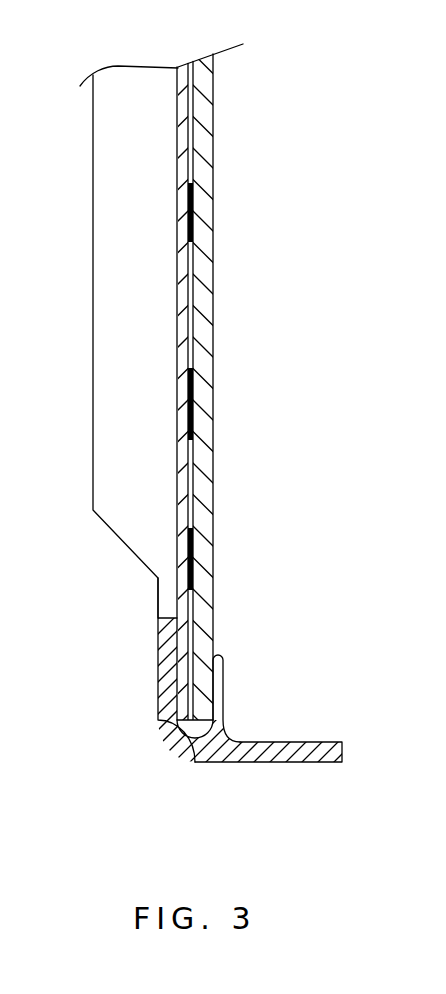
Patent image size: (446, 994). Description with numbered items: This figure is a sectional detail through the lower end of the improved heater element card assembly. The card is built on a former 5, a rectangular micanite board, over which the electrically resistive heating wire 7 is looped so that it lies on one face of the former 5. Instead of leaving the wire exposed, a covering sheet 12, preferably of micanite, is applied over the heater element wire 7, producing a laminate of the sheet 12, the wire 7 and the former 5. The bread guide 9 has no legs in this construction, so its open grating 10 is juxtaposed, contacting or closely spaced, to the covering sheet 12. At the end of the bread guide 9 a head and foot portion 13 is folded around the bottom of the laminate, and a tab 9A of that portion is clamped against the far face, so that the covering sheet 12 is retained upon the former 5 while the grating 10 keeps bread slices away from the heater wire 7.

The former 5 is at (205, 327).
The heating wire 7 is at (193, 201).
The bread guide 9 is at (158, 700).
The tabs 9A is at (221, 667).
The grating 10 is at (112, 302).
The covering sheet 12 is at (181, 95).
The head and foot portions 13 is at (292, 762).